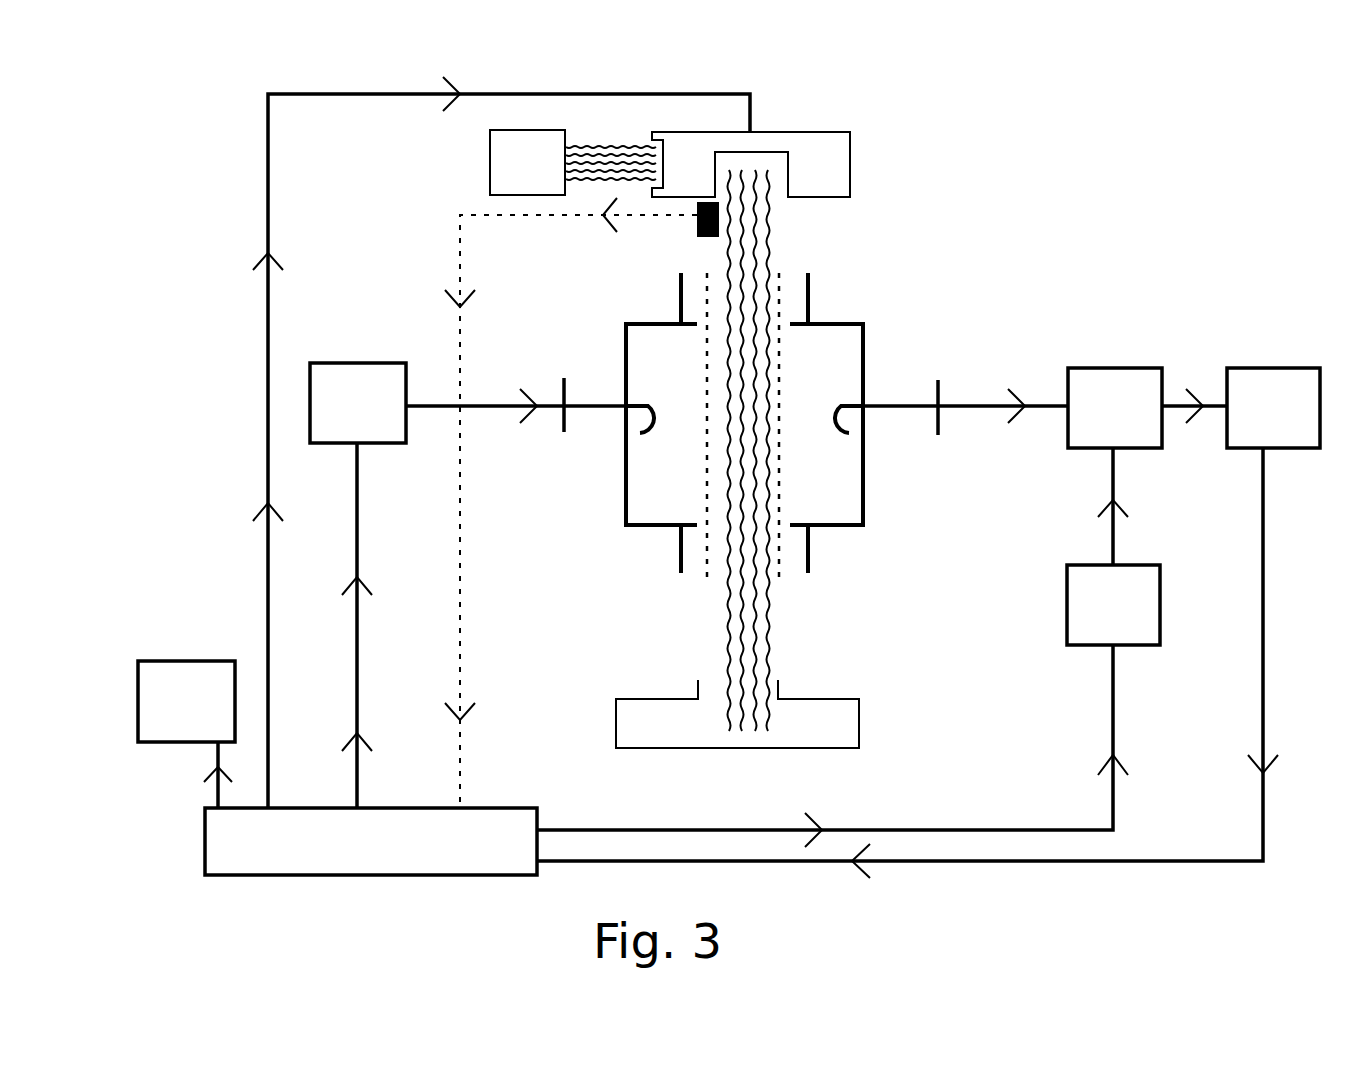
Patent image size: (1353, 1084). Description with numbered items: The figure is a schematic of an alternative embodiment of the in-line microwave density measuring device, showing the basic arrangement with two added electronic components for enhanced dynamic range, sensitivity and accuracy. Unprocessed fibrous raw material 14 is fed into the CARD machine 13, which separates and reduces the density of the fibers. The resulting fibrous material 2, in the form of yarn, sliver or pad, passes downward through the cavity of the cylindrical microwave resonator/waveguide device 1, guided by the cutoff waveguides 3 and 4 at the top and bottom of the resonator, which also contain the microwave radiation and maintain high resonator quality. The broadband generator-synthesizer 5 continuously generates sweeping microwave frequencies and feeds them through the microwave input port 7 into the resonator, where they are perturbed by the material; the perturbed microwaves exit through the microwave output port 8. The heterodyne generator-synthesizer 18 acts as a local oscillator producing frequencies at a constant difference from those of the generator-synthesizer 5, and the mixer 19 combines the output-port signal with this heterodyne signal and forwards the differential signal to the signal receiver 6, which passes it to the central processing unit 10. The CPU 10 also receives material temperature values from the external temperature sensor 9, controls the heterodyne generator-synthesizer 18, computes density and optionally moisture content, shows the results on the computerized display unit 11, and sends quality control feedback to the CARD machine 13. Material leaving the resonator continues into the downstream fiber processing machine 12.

The cylindrical microwave resonator/waveguide device 1 is at (653, 477).
The fibrous material 2 is at (752, 213).
The cutoff waveguide 3 is at (810, 302).
The cutoff waveguide 4 is at (808, 560).
The microwave radiation broadband generator-synthesizer 5 is at (358, 403).
The signal receiver 6 is at (1273, 408).
The microwave input port 7 is at (603, 404).
The microwave output port 8 is at (898, 404).
The external temperature sensor 9 is at (460, 235).
The central processing unit 10 is at (371, 841).
The computerized display unit 11 is at (186, 701).
The downstream fiber processing machine 12 is at (737, 714).
The CARD machine 13 is at (751, 184).
The fibrous raw material 14 is at (573, 162).
The heterodyne generator-synthesizer 18 is at (1113, 605).
The mixer 19 is at (1115, 408).